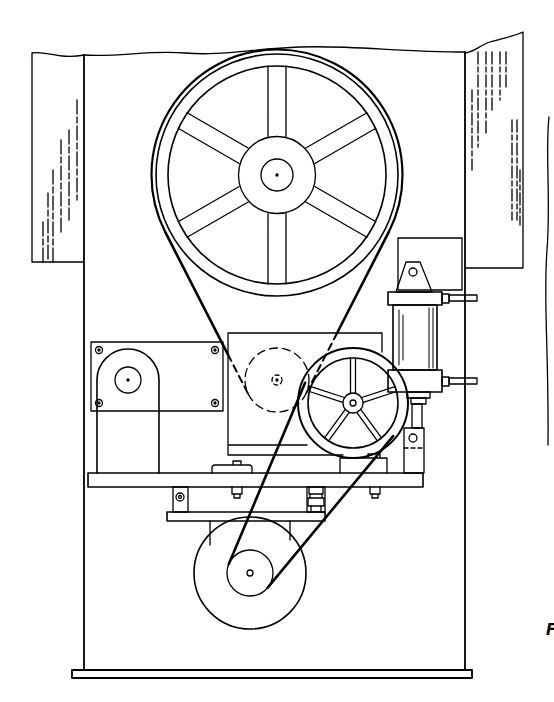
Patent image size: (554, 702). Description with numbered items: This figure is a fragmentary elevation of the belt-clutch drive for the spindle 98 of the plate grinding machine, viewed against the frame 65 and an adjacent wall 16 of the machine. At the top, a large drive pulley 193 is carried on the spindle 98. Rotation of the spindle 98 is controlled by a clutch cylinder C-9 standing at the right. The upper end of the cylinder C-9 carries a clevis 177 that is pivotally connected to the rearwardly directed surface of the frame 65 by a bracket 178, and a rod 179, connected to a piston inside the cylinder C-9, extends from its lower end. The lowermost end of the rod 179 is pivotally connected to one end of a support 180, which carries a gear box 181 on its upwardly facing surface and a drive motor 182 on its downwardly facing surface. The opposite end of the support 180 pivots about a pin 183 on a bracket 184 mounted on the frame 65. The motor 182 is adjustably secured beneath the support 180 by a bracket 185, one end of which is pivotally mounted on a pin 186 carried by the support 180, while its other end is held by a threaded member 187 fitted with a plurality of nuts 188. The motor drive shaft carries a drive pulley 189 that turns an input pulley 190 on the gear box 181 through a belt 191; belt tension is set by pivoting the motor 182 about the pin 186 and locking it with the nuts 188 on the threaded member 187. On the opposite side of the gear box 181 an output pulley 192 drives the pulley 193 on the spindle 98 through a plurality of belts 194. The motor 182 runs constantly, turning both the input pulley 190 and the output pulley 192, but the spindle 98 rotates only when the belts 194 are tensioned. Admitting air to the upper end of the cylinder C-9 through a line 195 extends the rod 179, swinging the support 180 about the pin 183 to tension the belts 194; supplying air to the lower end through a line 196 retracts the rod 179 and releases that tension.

The frame wall 16 is at (523, 88).
The frame 65 is at (465, 557).
The spindle 98 is at (292, 177).
The clevis 177 is at (420, 263).
The bracket 178 is at (410, 238).
The rod 179 is at (424, 413).
The support 180 is at (397, 490).
The gear box 181 is at (346, 341).
The drive motor 182 is at (302, 604).
The pin 183 is at (116, 378).
The bracket 184 is at (122, 342).
The bracket 185 is at (183, 521).
The pin 186 is at (176, 500).
The threaded member 187 is at (328, 518).
The nuts 188 is at (311, 537).
The drive pulley 189 is at (230, 583).
The input pulley 190 is at (342, 496).
The belt 191 is at (306, 553).
The output pulley 192 is at (283, 350).
The drive pulley 193 is at (348, 91).
The belts 194 is at (221, 324).
The line 195 is at (470, 297).
The line 196 is at (470, 380).
The clutch cylinder C-9 is at (440, 352).